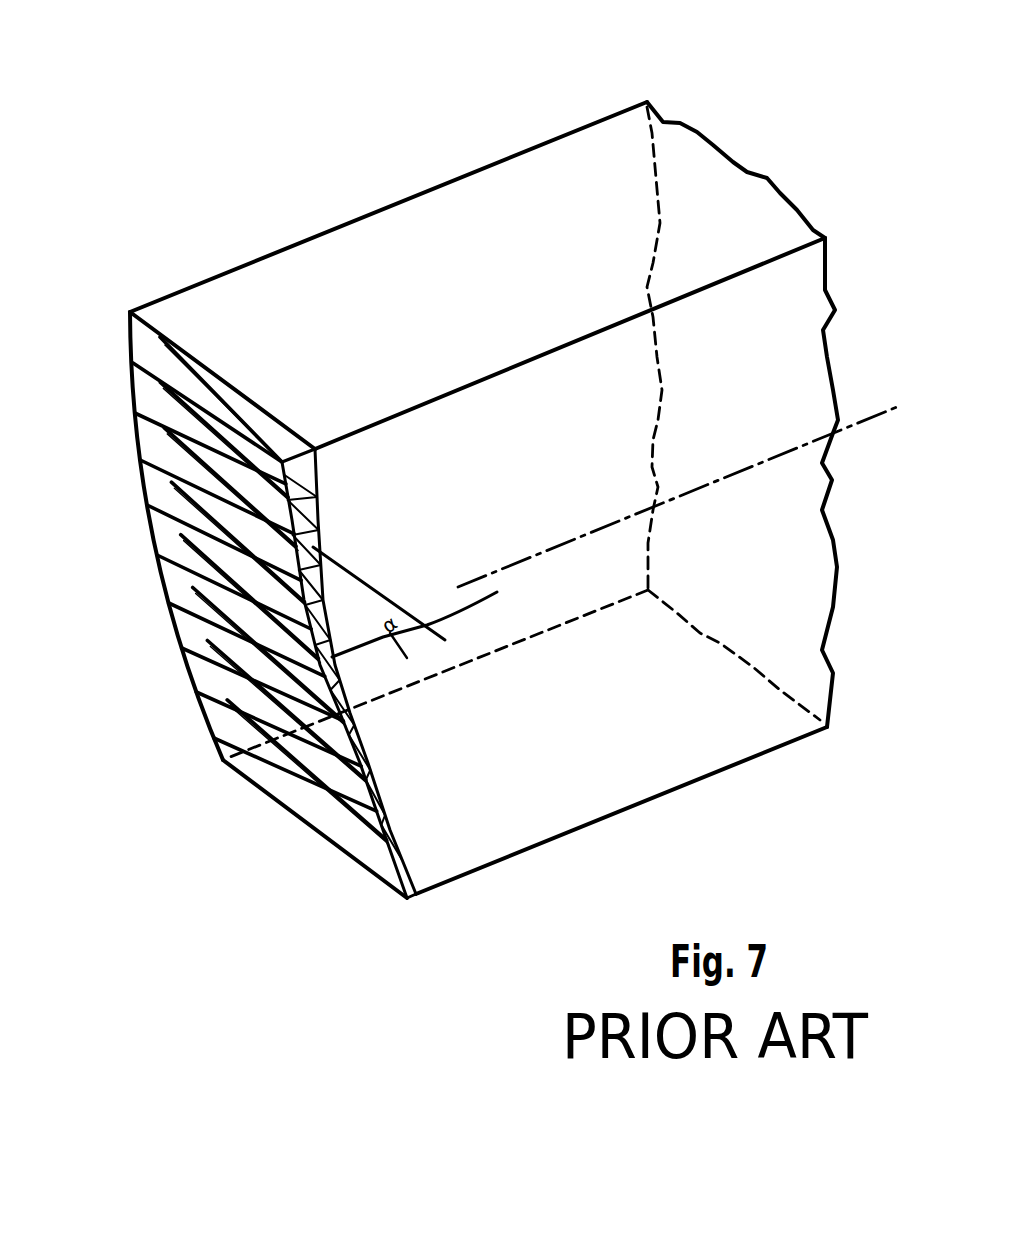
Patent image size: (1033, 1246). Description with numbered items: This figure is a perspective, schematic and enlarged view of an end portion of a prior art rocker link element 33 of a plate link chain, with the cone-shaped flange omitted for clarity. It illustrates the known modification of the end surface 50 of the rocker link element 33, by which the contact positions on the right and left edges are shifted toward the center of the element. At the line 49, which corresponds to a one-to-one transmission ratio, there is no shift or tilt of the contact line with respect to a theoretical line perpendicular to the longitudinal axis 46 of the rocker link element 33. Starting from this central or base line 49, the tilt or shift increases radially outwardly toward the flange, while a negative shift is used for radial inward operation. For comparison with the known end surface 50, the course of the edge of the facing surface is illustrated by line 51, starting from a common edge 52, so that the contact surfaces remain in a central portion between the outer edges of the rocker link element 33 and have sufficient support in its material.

The rocker link element 33 is at (444, 275).
The longitudinal axis 46 is at (737, 473).
The line 49 is at (262, 692).
The end surface 50 is at (318, 517).
The line 51 is at (333, 469).
The common edge 52 is at (130, 383).